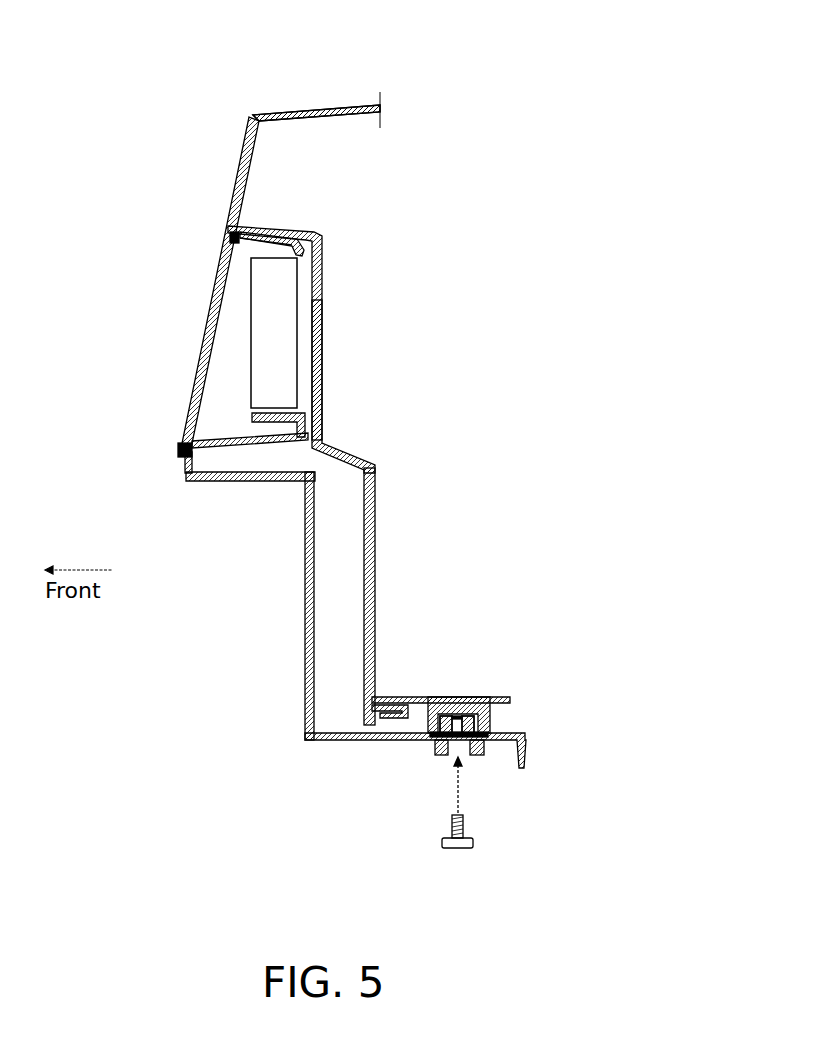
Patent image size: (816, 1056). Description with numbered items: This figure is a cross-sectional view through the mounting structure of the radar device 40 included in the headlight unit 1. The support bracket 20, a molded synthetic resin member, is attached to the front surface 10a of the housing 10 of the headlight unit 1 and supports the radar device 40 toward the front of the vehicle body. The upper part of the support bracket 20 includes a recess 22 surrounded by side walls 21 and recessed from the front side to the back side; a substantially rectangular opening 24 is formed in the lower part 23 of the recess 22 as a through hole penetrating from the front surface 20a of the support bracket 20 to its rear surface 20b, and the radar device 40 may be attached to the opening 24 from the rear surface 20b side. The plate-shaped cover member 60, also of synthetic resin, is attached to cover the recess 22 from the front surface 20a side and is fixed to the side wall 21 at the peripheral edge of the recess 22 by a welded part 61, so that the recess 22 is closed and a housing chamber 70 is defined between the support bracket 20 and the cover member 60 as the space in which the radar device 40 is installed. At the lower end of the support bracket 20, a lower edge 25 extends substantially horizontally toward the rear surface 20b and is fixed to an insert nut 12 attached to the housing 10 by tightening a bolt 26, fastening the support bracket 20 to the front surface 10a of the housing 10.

The headlight unit 1 is at (340, 108).
The housing 10 is at (275, 114).
The front surface 10a is at (364, 493).
The insert nut 12 is at (492, 727).
The support bracket 20 is at (309, 522).
The front surface 20a is at (185, 464).
The rear surface 20b is at (323, 428).
The side wall 21 is at (325, 230).
The recess 22 is at (258, 252).
The lower part 23 is at (310, 243).
The opening 24 is at (304, 257).
The lower edge 25 is at (341, 741).
The bolt 26 is at (465, 850).
The radar device 40 is at (250, 322).
The cover member 60 is at (185, 403).
The welded part 61 is at (232, 236).
The housing chamber 70 is at (229, 371).